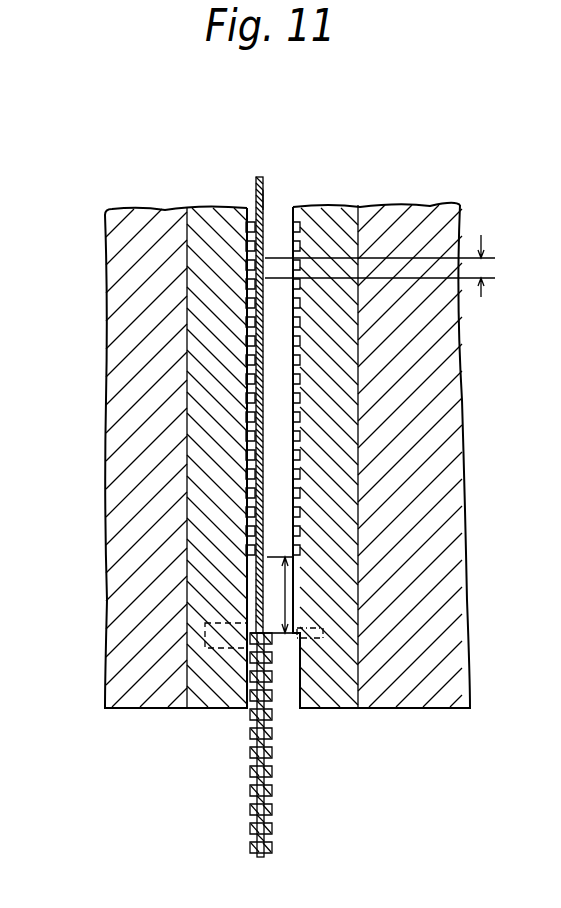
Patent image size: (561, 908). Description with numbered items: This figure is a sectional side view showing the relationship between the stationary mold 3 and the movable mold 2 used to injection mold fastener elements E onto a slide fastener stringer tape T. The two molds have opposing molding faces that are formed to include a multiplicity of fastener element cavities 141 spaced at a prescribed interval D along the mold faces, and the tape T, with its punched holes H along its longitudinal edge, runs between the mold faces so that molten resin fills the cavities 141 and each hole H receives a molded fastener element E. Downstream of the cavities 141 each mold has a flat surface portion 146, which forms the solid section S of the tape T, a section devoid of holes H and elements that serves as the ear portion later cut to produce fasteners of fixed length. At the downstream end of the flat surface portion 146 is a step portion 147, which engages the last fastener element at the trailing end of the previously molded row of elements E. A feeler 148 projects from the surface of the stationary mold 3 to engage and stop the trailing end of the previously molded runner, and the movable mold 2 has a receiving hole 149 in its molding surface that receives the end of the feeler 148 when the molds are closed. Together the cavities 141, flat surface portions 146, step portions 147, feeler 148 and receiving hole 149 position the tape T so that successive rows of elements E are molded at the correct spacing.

The movable mold 2 is at (345, 415).
The stationary mold 3 is at (208, 407).
The fastener element cavities 141 is at (245, 225).
The flat surface portion 146 is at (255, 572).
The step portion 147 is at (253, 627).
The feeler 148 is at (273, 633).
The receiving hole 149 is at (330, 634).
The slide fastener stringer tape T is at (263, 192).
The punched holes H is at (264, 208).
The prescribed interval D is at (391, 266).
The solid section S is at (279, 595).
The fastener element E is at (273, 825).